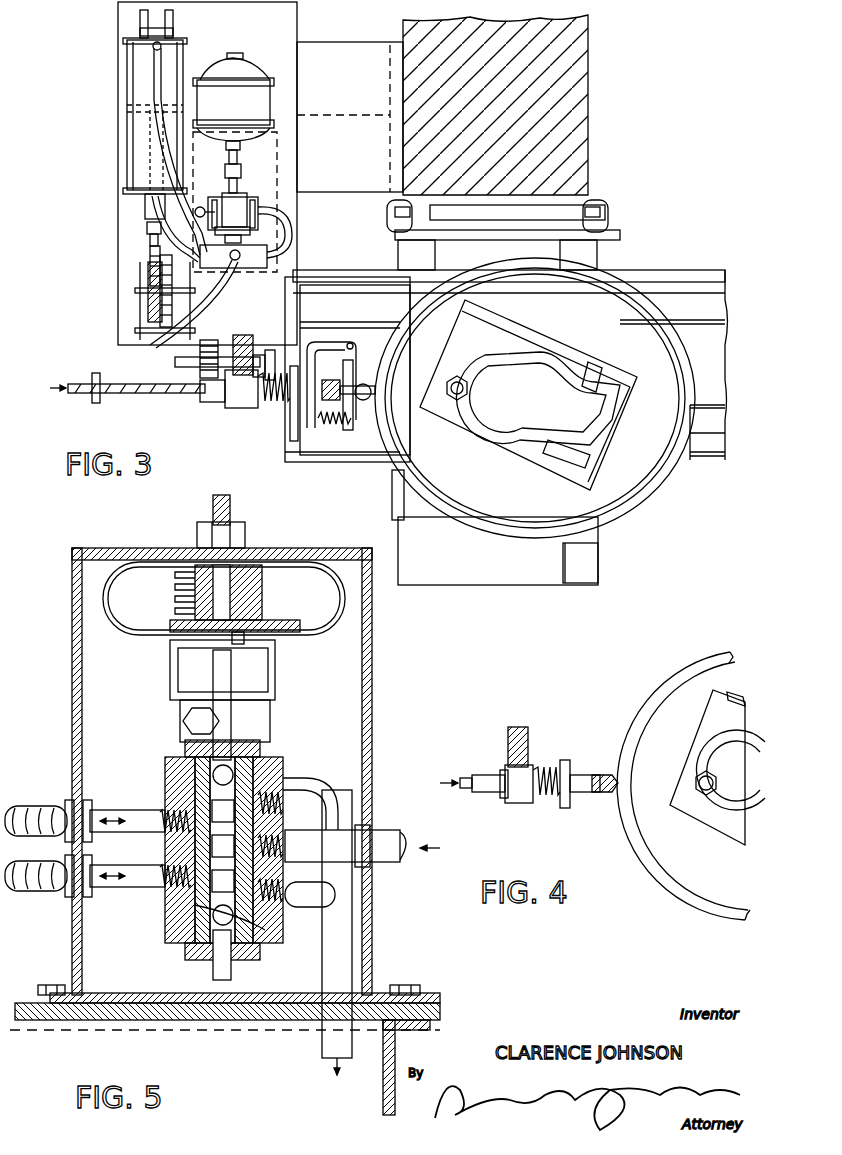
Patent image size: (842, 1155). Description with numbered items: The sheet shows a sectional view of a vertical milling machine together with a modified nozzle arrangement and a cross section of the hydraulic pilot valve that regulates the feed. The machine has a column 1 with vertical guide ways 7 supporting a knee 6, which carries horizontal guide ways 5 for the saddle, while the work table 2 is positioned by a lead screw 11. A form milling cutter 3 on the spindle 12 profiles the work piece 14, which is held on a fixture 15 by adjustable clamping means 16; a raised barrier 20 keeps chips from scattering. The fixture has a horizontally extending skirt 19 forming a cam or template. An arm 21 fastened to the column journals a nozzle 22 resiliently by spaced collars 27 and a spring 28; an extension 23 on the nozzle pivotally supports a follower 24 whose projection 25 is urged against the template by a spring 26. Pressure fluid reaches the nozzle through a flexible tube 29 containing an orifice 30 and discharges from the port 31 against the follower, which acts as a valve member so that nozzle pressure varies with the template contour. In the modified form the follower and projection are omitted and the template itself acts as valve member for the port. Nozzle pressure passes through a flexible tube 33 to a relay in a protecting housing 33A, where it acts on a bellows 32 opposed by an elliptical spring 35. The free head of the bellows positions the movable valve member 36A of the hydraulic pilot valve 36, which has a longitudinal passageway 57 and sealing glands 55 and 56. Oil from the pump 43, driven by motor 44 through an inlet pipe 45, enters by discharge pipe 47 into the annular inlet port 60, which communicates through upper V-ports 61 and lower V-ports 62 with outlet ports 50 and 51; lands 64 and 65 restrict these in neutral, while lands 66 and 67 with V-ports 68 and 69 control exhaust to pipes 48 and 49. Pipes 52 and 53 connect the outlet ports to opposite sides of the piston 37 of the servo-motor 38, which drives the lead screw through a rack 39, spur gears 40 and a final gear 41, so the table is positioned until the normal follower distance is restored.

In FIG. 3, the column 1 is at (590, 78).
In FIG. 3, the work table 2 is at (712, 465).
In FIG. 3, the form milling cutter 3 is at (467, 390).
In FIG. 3, the horizontal guide ways 5 is at (400, 530).
In FIG. 3, the knee 6 is at (460, 588).
In FIG. 3, the vertical guide ways 7 is at (392, 230).
In FIG. 3, the lead screw 11 is at (258, 352).
In FIG. 3, the spindle 12 is at (465, 385).
In FIG. 3, the work piece 14 is at (538, 398).
In FIG. 3, the fixture 15 is at (610, 450).
In FIG. 3, the adjustable clamping means 16 is at (592, 372).
In FIG. 3, the skirt (cam or template) 19 is at (670, 505).
In FIG. 4, the skirt (cam or template) 19 is at (685, 668).
In FIG. 3, the raised barrier 20 is at (468, 512).
In FIG. 3, the arm 21 is at (243, 333).
In FIG. 4, the arm 21 is at (525, 730).
In FIG. 3, the nozzle 22 is at (338, 382).
In FIG. 4, the nozzle 22 is at (597, 800).
In FIG. 3, the extension 23 is at (318, 342).
In FIG. 3, the follower 24 is at (353, 360).
In FIG. 3, the projection 25 is at (372, 390).
In FIG. 3, the spring 26 is at (325, 425).
In FIG. 3, the spaced collars 27 is at (205, 402).
In FIG. 4, the spaced collars 27 is at (503, 800).
In FIG. 3, the spring 28 is at (250, 408).
In FIG. 4, the spring 28 is at (530, 805).
In FIG. 3, the flexible tube 29 is at (115, 395).
In FIG. 4, the flexible tube 29 is at (470, 776).
In FIG. 3, the orifice (partial restriction) 30 is at (94, 375).
In FIG. 3, the port 31 is at (352, 395).
In FIG. 4, the port 31 is at (613, 775).
In FIG. 5, the bellows 32 is at (275, 600).
In FIG. 3, the flexible tube 33 is at (232, 280).
In FIG. 3, the protecting housing 33A is at (270, 265).
In FIG. 5, the protecting housing 33A is at (372, 672).
In FIG. 5, the elliptical spring 35 is at (312, 633).
In FIG. 5, the hydraulic pilot valve 36 is at (283, 765).
In FIG. 5, the movable valve member 36A is at (215, 960).
In FIG. 3, the piston 37 is at (148, 100).
In FIG. 3, the servo-motor 38 is at (127, 128).
In FIG. 3, the rack 39 is at (148, 250).
In FIG. 3, the spur gears 40 is at (155, 306).
In FIG. 3, the final gear 41 is at (200, 380).
In FIG. 3, the oil pump 43 is at (242, 200).
In FIG. 3, the motor 44 is at (245, 60).
In FIG. 3, the inlet pipe 45 is at (204, 207).
In FIG. 3, the discharge pipe 47 is at (290, 225).
In FIG. 5, the discharge pipe 47 is at (395, 830).
In FIG. 5, the exhaust pipe 48 is at (322, 790).
In FIG. 5, the exhaust pipe 49 is at (315, 908).
In FIG. 5, the outlet port 50 is at (190, 824).
In FIG. 5, the outlet port 51 is at (190, 879).
In FIG. 3, the pipe 52 is at (147, 228).
In FIG. 5, the pipe 52 is at (22, 806).
In FIG. 3, the pipe 53 is at (165, 63).
In FIG. 5, the pipe 53 is at (48, 893).
In FIG. 5, the sealing gland 55 is at (263, 740).
In FIG. 5, the sealing gland 56 is at (228, 955).
In FIG. 5, the passageway 57 is at (180, 735).
In FIG. 5, the inlet port 60 is at (260, 848).
In FIG. 5, the upper V-ports 61 is at (265, 812).
In FIG. 5, the lower V-ports 62 is at (245, 870).
In FIG. 5, the land 64 is at (208, 840).
In FIG. 5, the land 65 is at (208, 875).
In FIG. 5, the land 66 is at (283, 775).
In FIG. 5, the land 67 is at (265, 920).
In FIG. 5, the V-ports 68 is at (213, 773).
In FIG. 5, the V-ports 69 is at (213, 905).